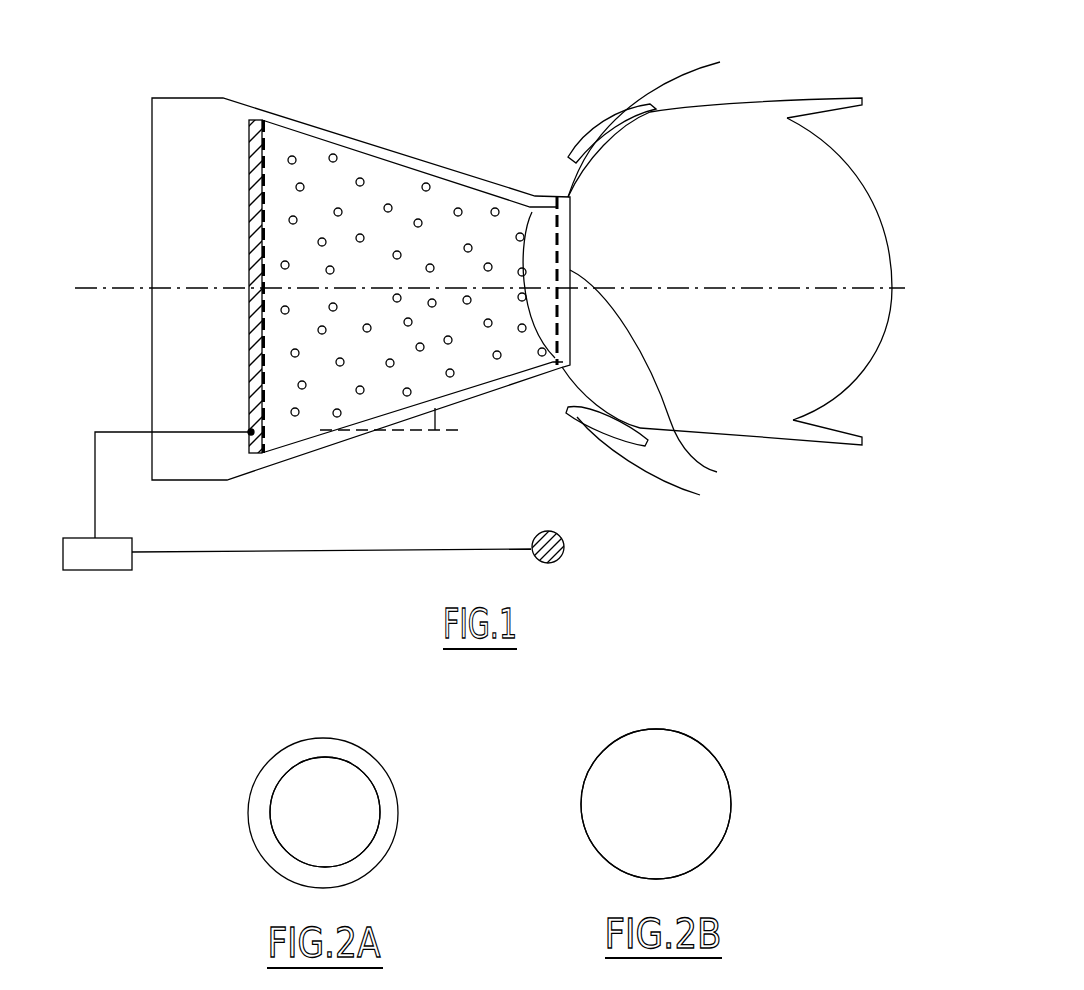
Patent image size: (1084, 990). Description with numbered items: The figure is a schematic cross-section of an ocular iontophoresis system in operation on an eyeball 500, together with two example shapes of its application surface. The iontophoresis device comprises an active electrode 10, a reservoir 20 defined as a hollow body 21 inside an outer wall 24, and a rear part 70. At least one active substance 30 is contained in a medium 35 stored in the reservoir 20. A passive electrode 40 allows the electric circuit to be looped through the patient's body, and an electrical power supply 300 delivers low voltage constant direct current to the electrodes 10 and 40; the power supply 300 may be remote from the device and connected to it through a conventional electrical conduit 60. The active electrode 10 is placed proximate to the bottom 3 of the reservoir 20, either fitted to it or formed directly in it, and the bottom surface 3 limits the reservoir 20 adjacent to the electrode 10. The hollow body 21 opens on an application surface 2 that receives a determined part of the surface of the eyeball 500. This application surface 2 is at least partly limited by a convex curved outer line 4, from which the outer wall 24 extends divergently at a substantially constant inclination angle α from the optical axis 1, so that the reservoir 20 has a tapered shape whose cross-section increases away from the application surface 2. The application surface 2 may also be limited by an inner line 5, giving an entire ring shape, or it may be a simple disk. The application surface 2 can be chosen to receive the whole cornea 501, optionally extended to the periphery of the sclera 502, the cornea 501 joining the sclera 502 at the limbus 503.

In FIG. 1, the optical axis 1 is at (98, 288).
In FIG. 1, the application surface 2 is at (538, 240).
In FIG. 2A, the application surface 2 is at (293, 757).
In FIG. 2B, the application surface 2 is at (680, 762).
In FIG. 1, the bottom 3 is at (250, 203).
In FIG. 1, the convex curved outer line 4 is at (556, 200).
In FIG. 2A, the convex curved outer line 4 is at (352, 743).
In FIG. 2B, the convex curved outer line 4 is at (598, 750).
In FIG. 2A, the inner line 5 is at (375, 792).
In FIG. 1, the active electrode 10 is at (253, 118).
In FIG. 1, the reservoir 20 is at (412, 255).
In FIG. 1, the hollow body 21 is at (458, 355).
In FIG. 1, the outer wall 24 is at (295, 125).
In FIG. 1, the active substance 30 is at (457, 210).
In FIG. 1, the medium 35 is at (413, 256).
In FIG. 1, the passive electrode 40 is at (568, 553).
In FIG. 1, the electrical conduit 60 is at (110, 432).
In FIG. 1, the rear part 70 is at (190, 128).
In FIG. 1, the electrical power supply 300 is at (120, 545).
In FIG. 1, the eyeball 500 is at (721, 260).
In FIG. 1, the cornea 501 is at (563, 232).
In FIG. 1, the sclera 502 is at (747, 145).
In FIG. 1, the limbus 503 is at (714, 451).